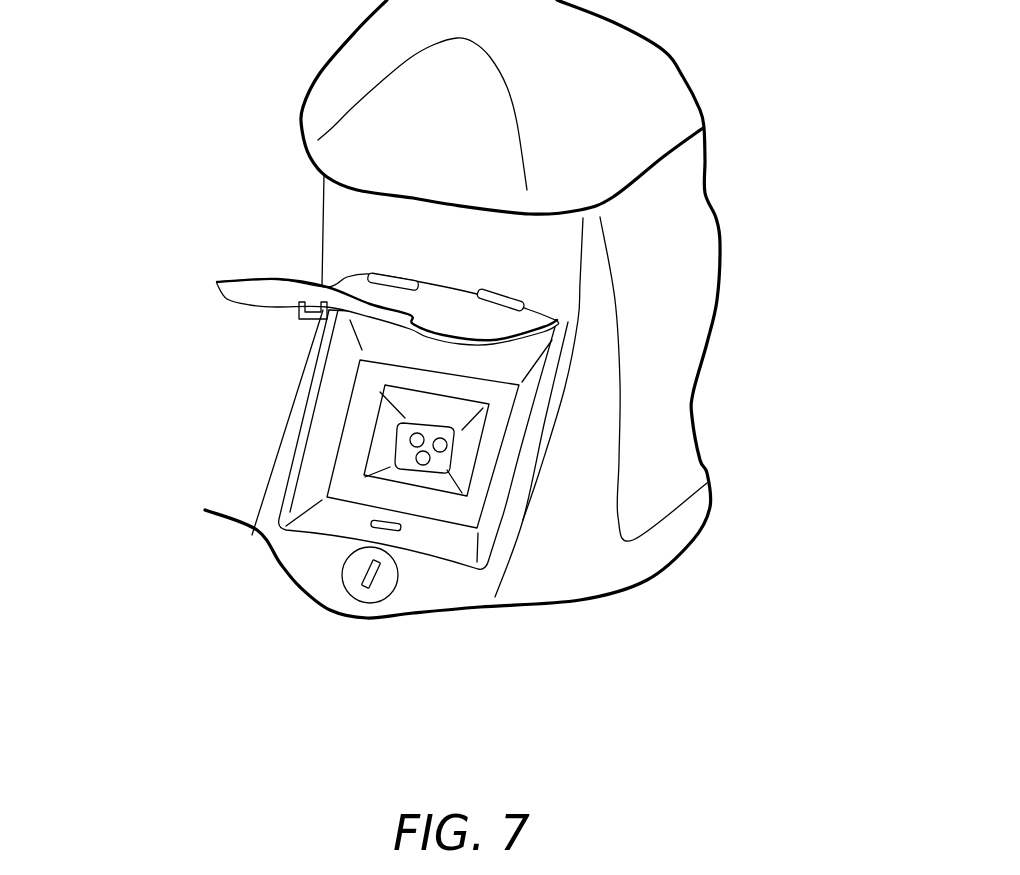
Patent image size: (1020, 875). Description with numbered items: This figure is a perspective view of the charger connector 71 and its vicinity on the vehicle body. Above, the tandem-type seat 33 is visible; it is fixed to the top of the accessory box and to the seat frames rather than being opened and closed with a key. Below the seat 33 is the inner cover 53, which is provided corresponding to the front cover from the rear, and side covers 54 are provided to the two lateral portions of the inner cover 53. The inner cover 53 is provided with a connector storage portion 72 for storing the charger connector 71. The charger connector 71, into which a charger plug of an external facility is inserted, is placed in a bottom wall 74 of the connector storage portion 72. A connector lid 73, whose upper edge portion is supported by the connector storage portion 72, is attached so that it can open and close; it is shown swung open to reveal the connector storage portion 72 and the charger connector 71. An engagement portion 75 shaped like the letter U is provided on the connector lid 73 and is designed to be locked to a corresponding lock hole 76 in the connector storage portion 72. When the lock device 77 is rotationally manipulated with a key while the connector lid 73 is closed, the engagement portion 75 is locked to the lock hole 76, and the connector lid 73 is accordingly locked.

The seat 33 is at (360, 73).
The inner cover 53 is at (563, 565).
The side cover 54 is at (663, 357).
The charger connector 71 is at (443, 460).
The connector storage portion 72 is at (307, 485).
The connector lid 73 is at (250, 294).
The bottom wall 74 is at (393, 440).
The engagement portion 75 is at (307, 320).
The lock hole 76 is at (390, 525).
The lock device 77 is at (357, 575).